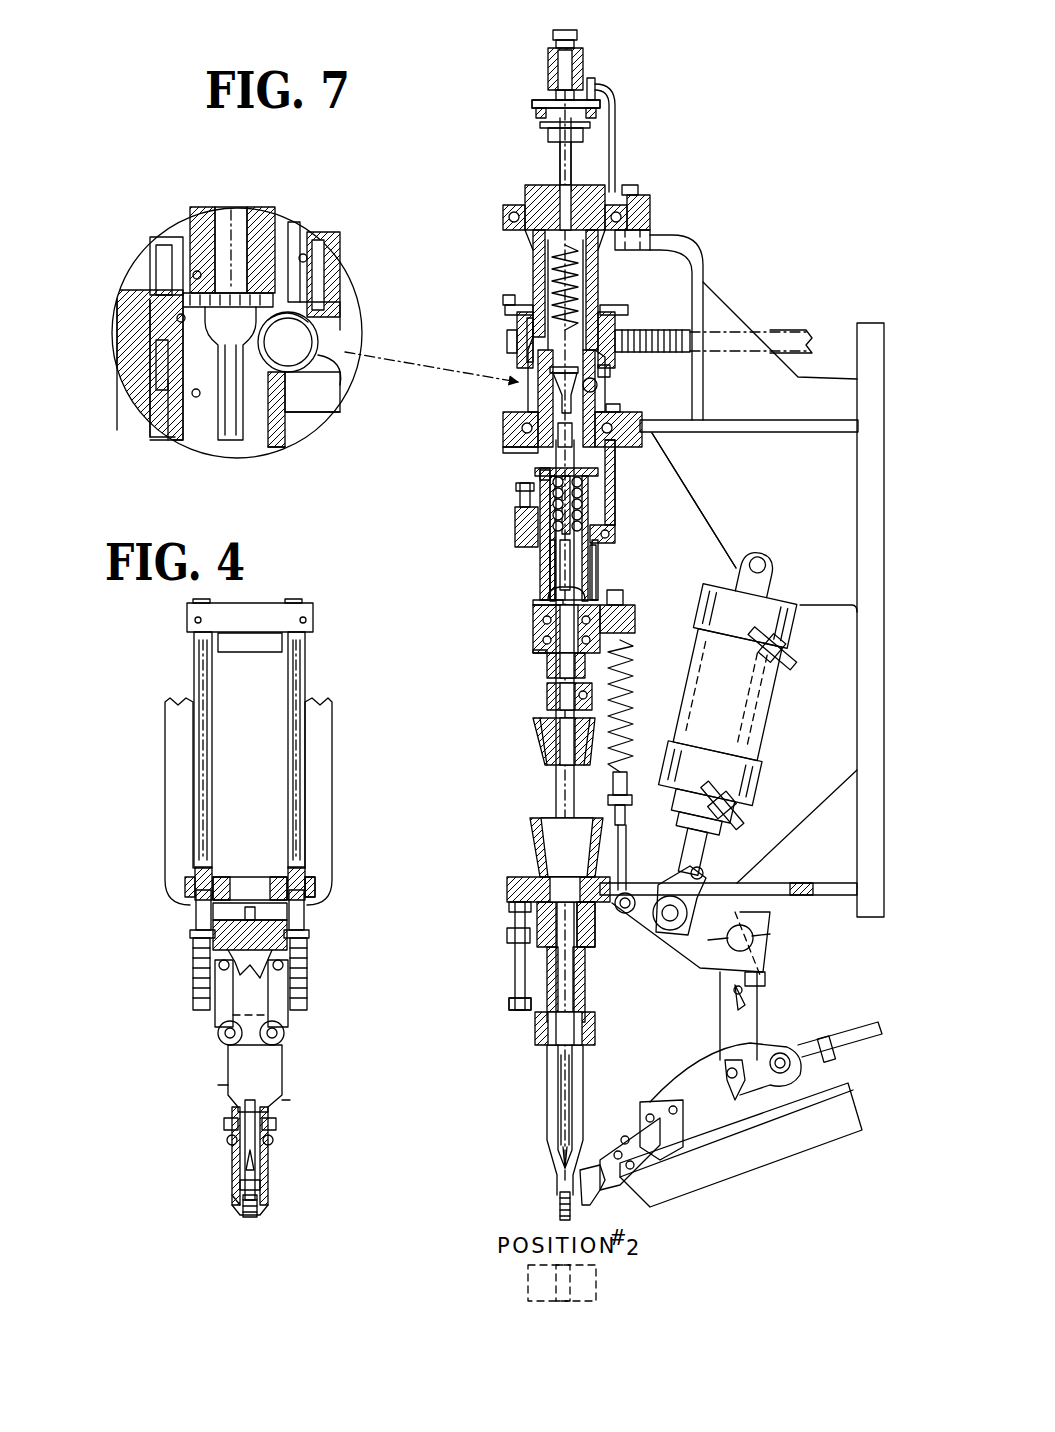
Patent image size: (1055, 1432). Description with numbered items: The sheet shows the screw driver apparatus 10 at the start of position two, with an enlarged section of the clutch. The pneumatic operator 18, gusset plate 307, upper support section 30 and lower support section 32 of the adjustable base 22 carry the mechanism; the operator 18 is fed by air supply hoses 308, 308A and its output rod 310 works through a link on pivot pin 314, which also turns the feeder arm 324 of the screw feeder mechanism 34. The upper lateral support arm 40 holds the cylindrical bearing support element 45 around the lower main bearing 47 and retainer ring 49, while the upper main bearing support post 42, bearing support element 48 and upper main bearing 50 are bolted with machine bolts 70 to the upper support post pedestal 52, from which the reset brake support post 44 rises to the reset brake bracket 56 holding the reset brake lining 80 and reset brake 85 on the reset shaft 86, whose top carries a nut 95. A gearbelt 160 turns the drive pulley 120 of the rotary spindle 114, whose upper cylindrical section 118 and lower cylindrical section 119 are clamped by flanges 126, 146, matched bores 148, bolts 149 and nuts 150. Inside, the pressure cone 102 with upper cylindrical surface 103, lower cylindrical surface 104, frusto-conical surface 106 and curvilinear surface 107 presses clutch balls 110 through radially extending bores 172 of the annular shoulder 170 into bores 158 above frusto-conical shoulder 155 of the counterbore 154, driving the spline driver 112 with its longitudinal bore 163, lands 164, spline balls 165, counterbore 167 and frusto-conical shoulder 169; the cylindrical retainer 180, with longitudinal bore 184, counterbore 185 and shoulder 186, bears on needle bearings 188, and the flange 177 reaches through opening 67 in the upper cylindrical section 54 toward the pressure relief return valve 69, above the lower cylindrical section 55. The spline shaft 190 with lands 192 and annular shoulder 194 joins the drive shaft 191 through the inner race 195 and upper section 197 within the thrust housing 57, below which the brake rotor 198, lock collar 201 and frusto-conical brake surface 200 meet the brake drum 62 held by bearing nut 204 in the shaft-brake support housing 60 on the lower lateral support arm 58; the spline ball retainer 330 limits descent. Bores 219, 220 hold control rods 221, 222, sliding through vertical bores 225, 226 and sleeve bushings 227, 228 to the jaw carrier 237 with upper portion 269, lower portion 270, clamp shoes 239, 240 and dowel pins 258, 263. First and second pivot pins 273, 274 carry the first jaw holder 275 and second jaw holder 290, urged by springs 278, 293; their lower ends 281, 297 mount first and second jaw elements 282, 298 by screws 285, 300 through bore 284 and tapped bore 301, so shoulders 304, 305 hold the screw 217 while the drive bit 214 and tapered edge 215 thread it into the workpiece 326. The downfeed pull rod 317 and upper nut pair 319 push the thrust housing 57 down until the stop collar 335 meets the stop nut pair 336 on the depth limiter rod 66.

In FIG. 4, the screw driver apparatus 10 is at (450, 90).
In FIG. 4, the pneumatic operator 18 is at (740, 698).
In FIG. 4, the vertically adjustable base 22 is at (878, 705).
In FIG. 4, the upper support section 30 is at (816, 488).
In FIG. 4, the lower support section 32 is at (831, 851).
In FIG. 4, the screw feeder mechanism 34 is at (790, 1020).
In FIG. 4, the upper lateral support arm 40 is at (748, 432).
In FIG. 4, the upper main bearing support post 42 is at (700, 255).
In FIG. 4, the reset brake support post 44 is at (616, 135).
In FIG. 4, the cylindrical bearing support element 45 is at (500, 437).
In FIG. 4, the lower main bearing 47 is at (503, 420).
In FIG. 4, the bearing support element 48 is at (505, 215).
In FIG. 4, the retainer ring 49 is at (632, 412).
In FIG. 4, the upper main bearing 50 is at (520, 235).
In FIG. 4, the upper support post pedestal 52 is at (650, 205).
In FIG. 4, the upper cylindrical section 54 is at (615, 498).
In FIG. 4, the lower cylindrical section 55 is at (600, 560).
In FIG. 4, the reset brake bracket 56 is at (548, 60).
In FIG. 4, the thrust housing 57 is at (598, 598).
In FIG. 4, the lower lateral support arm 58 is at (835, 897).
In FIG. 4, the shaft-brake support housing 60 is at (507, 893).
In FIG. 4, the brake drum 62 is at (535, 840).
In FIG. 4, the depth limiter rod 66 is at (512, 961).
In FIG. 4, the opening 67 is at (515, 462).
In FIG. 4, the pressure relief return valve 69 is at (516, 492).
In FIG. 4, the machine bolts 70 is at (640, 190).
In FIG. 4, the reset brake lining 80 is at (528, 108).
In FIG. 4, the reset brake 85 is at (548, 135).
In FIG. 7, the reset shaft 86 is at (236, 215).
In FIG. 4, the reset shaft 86 is at (571, 150).
In FIG. 4, the nut 95 is at (578, 42).
In FIG. 7, the pressure cone 102 is at (278, 440).
In FIG. 7, the upper cylindrical surface 103 is at (170, 297).
In FIG. 7, the lower cylindrical surface 104 is at (205, 455).
In FIG. 7, the frusto-conical surface 106 is at (180, 318).
In FIG. 7, the curvilinear surface 107 is at (312, 378).
In FIG. 7, the clutch balls 110 is at (300, 335).
In FIG. 4, the clutch balls 110 is at (598, 388).
In FIG. 4, the spline driver 112 is at (535, 560).
In FIG. 4, the rotary spindle 114 is at (545, 195).
In FIG. 4, the upper cylindrical section 118 is at (535, 280).
In FIG. 7, the lower cylindrical section 119 is at (125, 318).
In FIG. 4, the drive pulley 120 is at (503, 300).
In FIG. 4, the flange 126 is at (620, 332).
In FIG. 4, the flange 146 is at (510, 380).
In FIG. 4, the matched bores 148 is at (503, 340).
In FIG. 4, the bolts 149 is at (508, 320).
In FIG. 4, the nuts 150 is at (604, 372).
In FIG. 7, the counterbore 154 is at (330, 258).
In FIG. 7, the frusto-conical shoulder 155 is at (306, 400).
In FIG. 7, the bores 158 is at (345, 352).
In FIG. 4, the gearbelt 160 is at (775, 330).
In FIG. 7, the longitudinal bore 163 is at (170, 415).
In FIG. 4, the lands 164 is at (605, 525).
In FIG. 4, the spline balls 165 is at (538, 540).
In FIG. 7, the counterbore 167 is at (160, 240).
In FIG. 7, the frusto-conical shoulder 169 is at (170, 345).
In FIG. 7, the annular shoulder 170 is at (160, 378).
In FIG. 7, the radially extending bores 172 is at (330, 312).
In FIG. 4, the flange 177 is at (605, 470).
In FIG. 7, the cylindrical retainer 180 is at (270, 220).
In FIG. 7, the longitudinal bore 184 is at (296, 235).
In FIG. 4, the counterbore 185 is at (572, 300).
In FIG. 4, the shoulder 186 is at (508, 355).
In FIG. 7, the needle bearings 188 is at (205, 230).
In FIG. 4, the spline shaft 190 is at (555, 575).
In FIG. 4, the drive shaft 191 is at (558, 792).
In FIG. 4, the lands 192 is at (540, 478).
In FIG. 4, the annular shoulder 194 is at (545, 603).
In FIG. 4, the inner race 195 is at (547, 655).
In FIG. 4, the upper section 197 is at (535, 620).
In FIG. 4, the brake rotor 198 is at (545, 752).
In FIG. 4, the frusto-conical brake surface 200 is at (548, 732).
In FIG. 4, the lock collar 201 is at (592, 695).
In FIG. 4, the bearing nut 204 is at (592, 925).
In FIG. 4, the drive bit 214 is at (562, 1115).
In FIG. 4, the tapered edge 215 is at (562, 1160).
In FIG. 4, the screw 217 is at (560, 1215).
In FIG. 4, the bore 219 is at (195, 618).
In FIG. 4, the bore 220 is at (305, 618).
In FIG. 4, the control rod 221 is at (198, 790).
In FIG. 4, the control rod 222 is at (300, 745).
In FIG. 4, the vertical bore 225 is at (215, 875).
In FIG. 4, the vertical bore 226 is at (295, 868).
In FIG. 4, the sleeve bushing 227 is at (185, 880).
In FIG. 4, the sleeve bushing 228 is at (312, 868).
In FIG. 4, the jaw carrier 237 is at (258, 925).
In FIG. 4, the clamp shoe 239 is at (190, 920).
In FIG. 4, the clamp shoe 240 is at (315, 928).
In FIG. 4, the dowel pin 258 is at (182, 935).
In FIG. 4, the dowel pin 263 is at (318, 938).
In FIG. 4, the upper portion 269 is at (250, 898).
In FIG. 4, the lower portion 270 is at (265, 1020).
In FIG. 4, the first pivot pin 273 is at (225, 1035).
In FIG. 4, the second pivot pin 274 is at (275, 1035).
In FIG. 4, the first jaw holder 275 is at (218, 1010).
In FIG. 4, the spring 278 is at (215, 965).
In FIG. 4, the lower end 281 is at (220, 1095).
In FIG. 4, the first jaw element 282 is at (235, 1165).
In FIG. 4, the bore 284 is at (232, 1140).
In FIG. 4, the screw 285 is at (228, 1122).
In FIG. 4, the second jaw holder 290 is at (283, 1085).
In FIG. 4, the spring 293 is at (278, 965).
In FIG. 4, the lower end 297 is at (283, 1100).
In FIG. 4, the second jaw element 298 is at (268, 1170).
In FIG. 4, the screw 300 is at (270, 1125).
In FIG. 4, the tapped bore 301 is at (258, 1134).
In FIG. 4, the shoulder 304 is at (240, 1202).
In FIG. 4, the shoulder 305 is at (258, 1200).
In FIG. 4, the gusset plate 307 is at (830, 583).
In FIG. 4, the air supply hose 308 is at (748, 800).
In FIG. 4, the air supply hose 308A is at (790, 678).
In FIG. 4, the output rod 310 is at (703, 846).
In FIG. 4, the pivot pin 314 is at (755, 940).
In FIG. 4, the downfeed pull rod 317 is at (625, 690).
In FIG. 4, the upper nut pair 319 is at (630, 605).
In FIG. 4, the feeder arm 324 is at (720, 1012).
In FIG. 4, the workpiece 326 is at (525, 1290).
In FIG. 4, the spline ball retainer 330 is at (547, 685).
In FIG. 4, the stop collar 335 is at (507, 935).
In FIG. 4, the stop nut pair 336 is at (515, 1012).